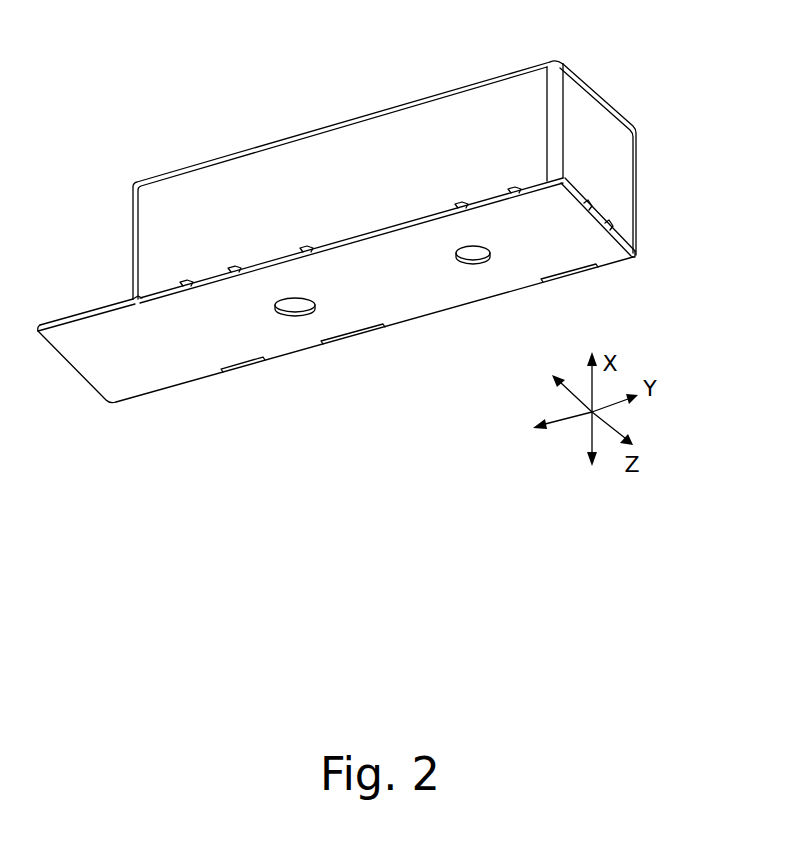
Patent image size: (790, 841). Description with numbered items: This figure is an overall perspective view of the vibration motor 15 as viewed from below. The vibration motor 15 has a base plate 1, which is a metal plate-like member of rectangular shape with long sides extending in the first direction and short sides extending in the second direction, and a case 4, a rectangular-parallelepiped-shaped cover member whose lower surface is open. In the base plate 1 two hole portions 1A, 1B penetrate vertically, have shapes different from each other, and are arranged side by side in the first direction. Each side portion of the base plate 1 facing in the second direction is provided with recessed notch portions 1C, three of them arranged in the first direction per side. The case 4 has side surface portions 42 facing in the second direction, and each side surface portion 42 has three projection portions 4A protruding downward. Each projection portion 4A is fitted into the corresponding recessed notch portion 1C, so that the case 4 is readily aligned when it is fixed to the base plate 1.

The vibration motor 15 is at (389, 84).
The base plate 1 is at (108, 406).
The hole portion 1A is at (300, 313).
The hole portion 1B is at (475, 262).
The recessed notch portion 1C is at (135, 299).
The case 4 is at (557, 62).
The side surface portion 42 is at (245, 170).
The projection portion 4A is at (167, 301).